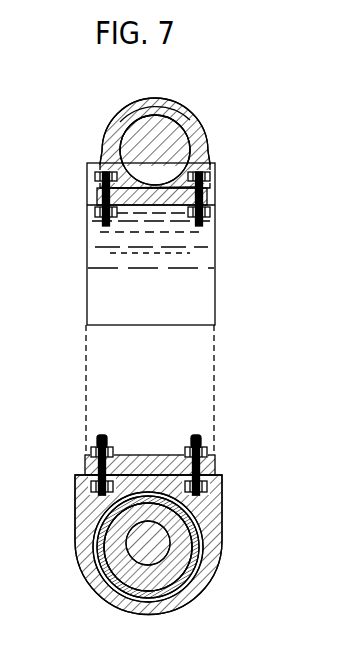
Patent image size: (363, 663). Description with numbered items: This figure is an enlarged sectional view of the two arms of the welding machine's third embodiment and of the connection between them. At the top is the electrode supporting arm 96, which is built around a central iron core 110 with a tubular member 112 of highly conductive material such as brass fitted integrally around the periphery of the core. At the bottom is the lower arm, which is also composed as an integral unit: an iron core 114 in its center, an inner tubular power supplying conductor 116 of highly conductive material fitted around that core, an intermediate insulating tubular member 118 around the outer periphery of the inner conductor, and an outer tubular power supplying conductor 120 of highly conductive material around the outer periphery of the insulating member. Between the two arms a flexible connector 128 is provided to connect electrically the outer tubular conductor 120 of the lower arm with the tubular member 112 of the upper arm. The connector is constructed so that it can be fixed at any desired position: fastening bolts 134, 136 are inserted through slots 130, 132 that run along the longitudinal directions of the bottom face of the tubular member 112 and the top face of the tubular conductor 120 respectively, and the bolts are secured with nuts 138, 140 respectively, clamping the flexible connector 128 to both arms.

The electrode supporting arm 96 is at (237, 157).
The iron core 110 is at (180, 100).
The tubular member 112 is at (188, 128).
The iron core 114 is at (170, 533).
The inner tubular power supplying conductor 116 is at (172, 548).
The intermediate insulating tubular member 118 is at (195, 572).
The outer tubular power supplying conductor 120 is at (192, 598).
The flexible connector 128 is at (212, 199).
The slot 130 is at (175, 150).
The slot 132 is at (80, 521).
The fastening bolt 134 is at (88, 197).
The fastening bolt 136 is at (90, 486).
The nut 138 is at (196, 225).
The nut 140 is at (192, 440).